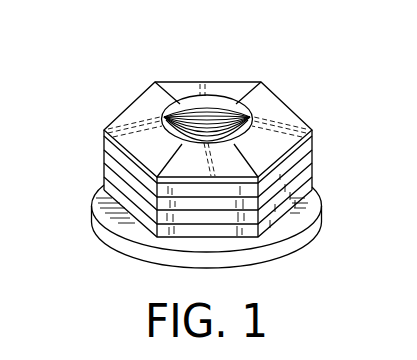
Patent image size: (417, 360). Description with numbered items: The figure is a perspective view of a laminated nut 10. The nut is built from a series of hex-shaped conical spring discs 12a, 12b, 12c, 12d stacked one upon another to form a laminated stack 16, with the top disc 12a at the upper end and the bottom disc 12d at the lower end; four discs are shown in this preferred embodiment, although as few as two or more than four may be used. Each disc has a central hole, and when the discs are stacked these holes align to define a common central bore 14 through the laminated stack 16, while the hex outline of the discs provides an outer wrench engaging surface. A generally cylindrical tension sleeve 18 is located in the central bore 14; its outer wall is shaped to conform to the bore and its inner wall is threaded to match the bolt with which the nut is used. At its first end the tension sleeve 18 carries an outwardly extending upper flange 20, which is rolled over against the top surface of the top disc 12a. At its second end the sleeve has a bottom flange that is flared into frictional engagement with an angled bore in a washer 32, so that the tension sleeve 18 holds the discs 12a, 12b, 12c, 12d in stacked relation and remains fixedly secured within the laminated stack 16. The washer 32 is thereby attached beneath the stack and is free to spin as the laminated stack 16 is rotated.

The laminated nut 10 is at (89, 241).
The top disc 12a is at (312, 143).
The conical spring disc 12b is at (313, 157).
The conical spring disc 12c is at (305, 175).
The bottom disc 12d is at (304, 195).
The central bore 14 is at (250, 113).
The laminated stack 16 is at (100, 155).
The tension sleeve 18 is at (201, 82).
The upper flange 20 is at (138, 112).
The washer 32 is at (296, 238).